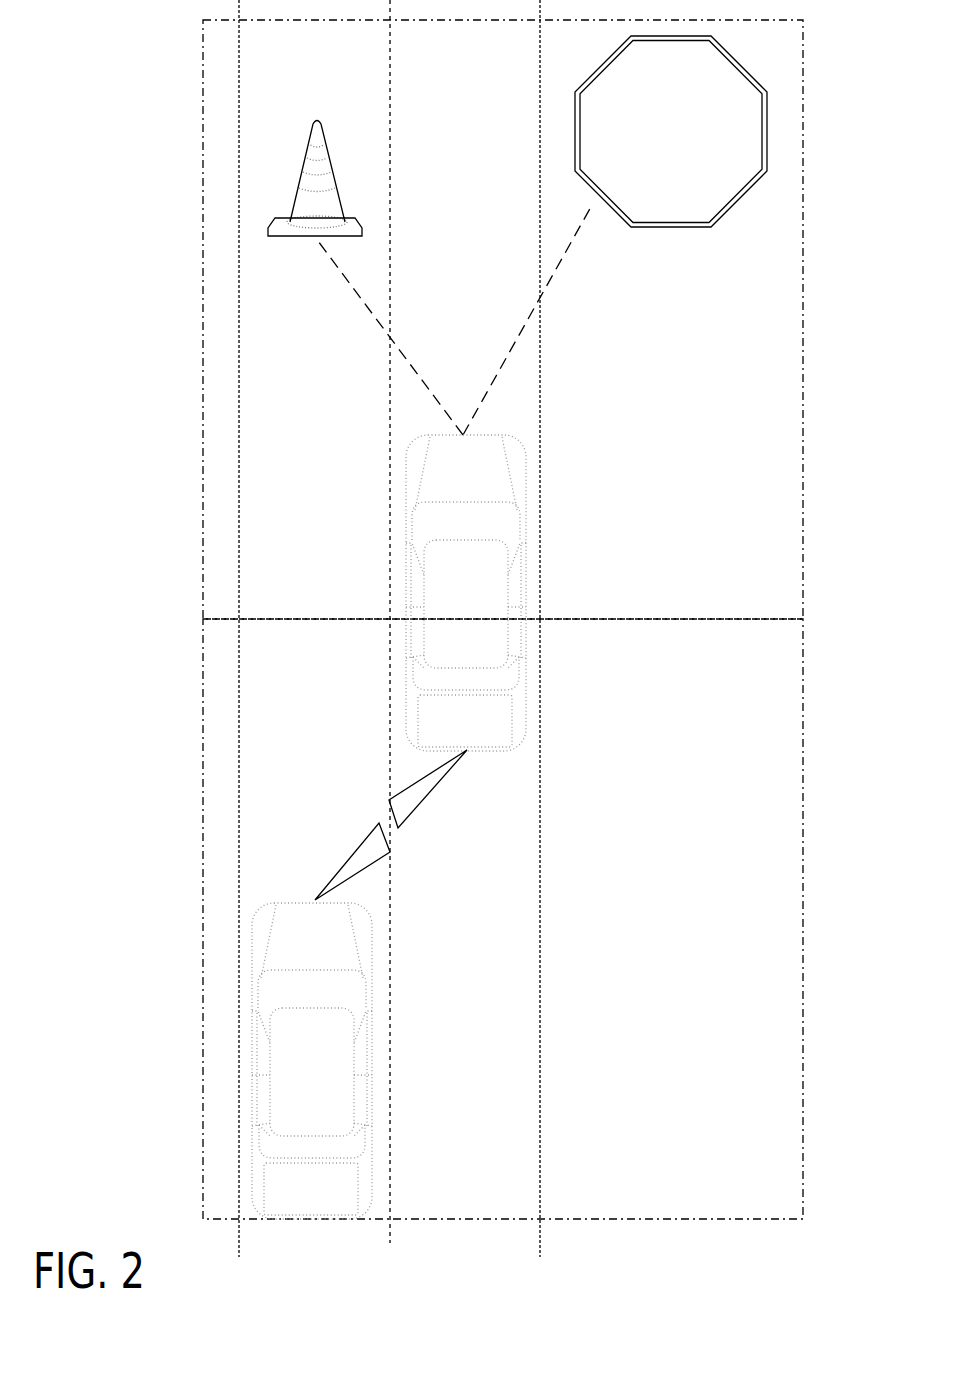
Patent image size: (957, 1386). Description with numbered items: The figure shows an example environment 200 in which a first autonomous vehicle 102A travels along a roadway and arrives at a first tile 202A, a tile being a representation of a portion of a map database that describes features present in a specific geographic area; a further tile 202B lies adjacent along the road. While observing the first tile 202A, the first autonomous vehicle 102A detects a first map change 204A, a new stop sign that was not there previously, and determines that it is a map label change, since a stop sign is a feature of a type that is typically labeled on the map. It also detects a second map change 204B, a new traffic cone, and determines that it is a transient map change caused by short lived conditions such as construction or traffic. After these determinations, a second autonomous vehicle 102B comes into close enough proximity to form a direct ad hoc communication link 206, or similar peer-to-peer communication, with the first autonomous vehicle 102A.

The environment 200 is at (138, 68).
The first autonomous vehicle 102A is at (493, 613).
The second autonomous vehicle 102B is at (342, 1083).
The first tile 202A is at (803, 135).
The second road segment 202B is at (803, 822).
The first map change 204A is at (684, 228).
The second map change 204B is at (347, 100).
The direct ad hoc communication link 206 is at (408, 826).